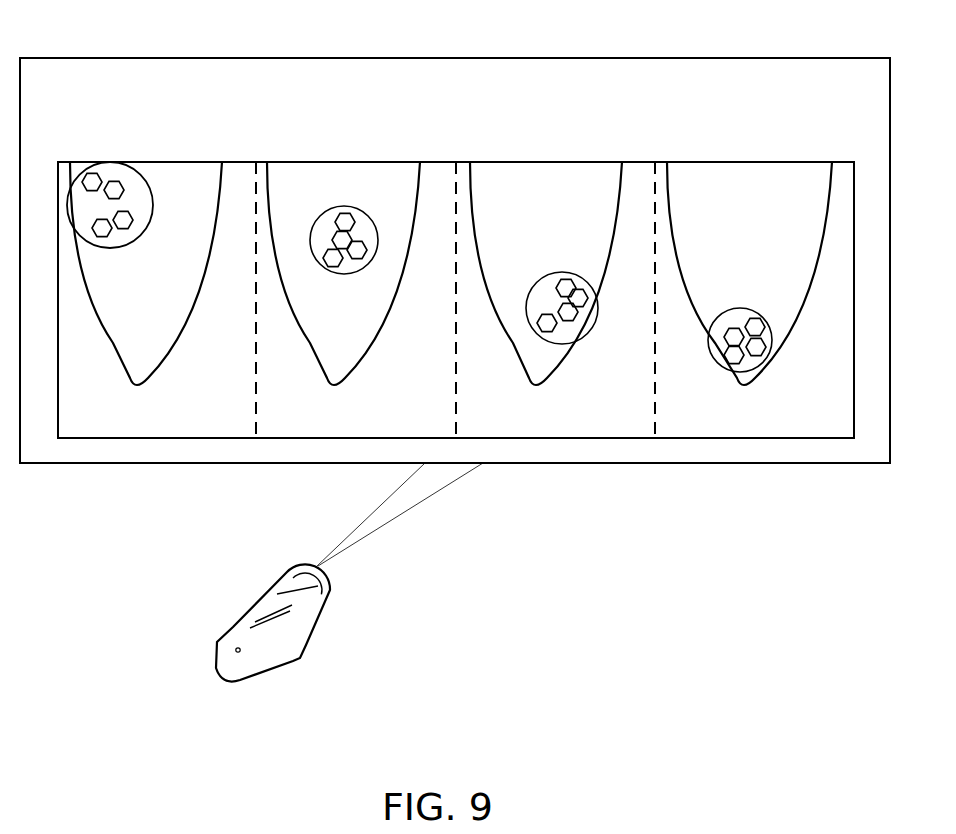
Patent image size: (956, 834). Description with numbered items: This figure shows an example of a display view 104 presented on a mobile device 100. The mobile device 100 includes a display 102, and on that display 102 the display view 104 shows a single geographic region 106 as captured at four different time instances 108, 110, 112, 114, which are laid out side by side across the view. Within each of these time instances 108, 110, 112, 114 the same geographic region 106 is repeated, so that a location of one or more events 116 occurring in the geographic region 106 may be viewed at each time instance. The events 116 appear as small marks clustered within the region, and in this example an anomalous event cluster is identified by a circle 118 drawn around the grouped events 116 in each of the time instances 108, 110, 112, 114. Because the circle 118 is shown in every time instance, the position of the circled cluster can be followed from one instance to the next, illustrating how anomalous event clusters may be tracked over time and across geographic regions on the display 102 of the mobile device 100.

The mobile device 100 is at (232, 651).
The display 102 is at (297, 583).
The display view 104 is at (705, 463).
The geographic region 106 is at (140, 341).
The time instance 108 is at (138, 88).
The time instance 110 is at (353, 88).
The time instance 112 is at (560, 88).
The time instance 114 is at (762, 88).
The events 116 is at (92, 178).
The circle 118 is at (110, 248).